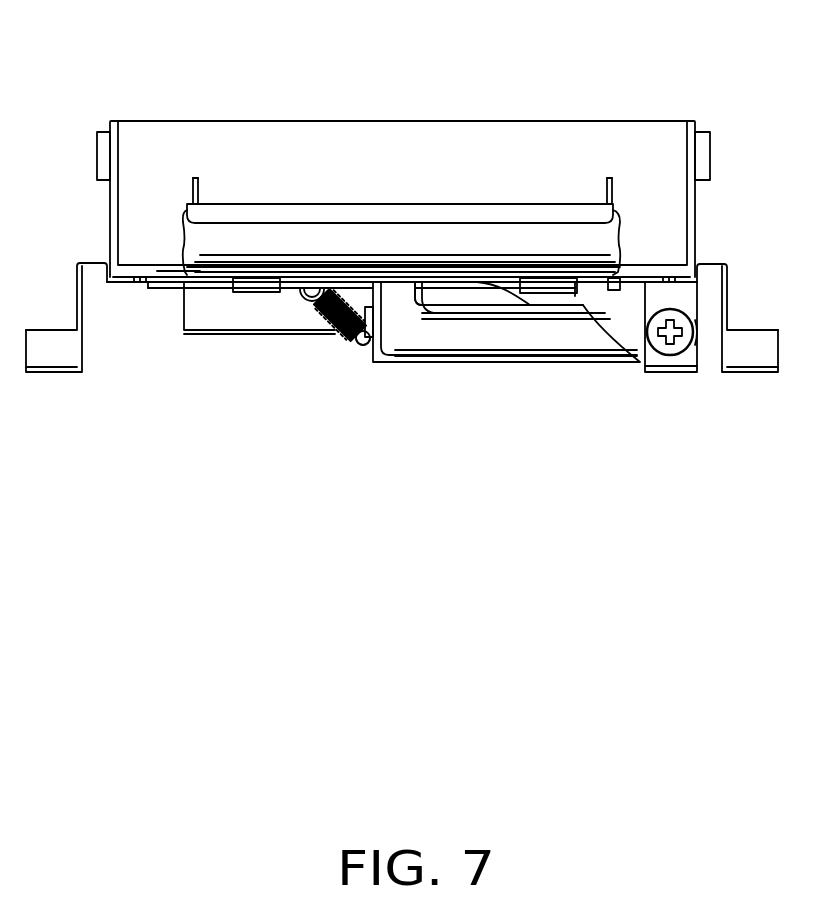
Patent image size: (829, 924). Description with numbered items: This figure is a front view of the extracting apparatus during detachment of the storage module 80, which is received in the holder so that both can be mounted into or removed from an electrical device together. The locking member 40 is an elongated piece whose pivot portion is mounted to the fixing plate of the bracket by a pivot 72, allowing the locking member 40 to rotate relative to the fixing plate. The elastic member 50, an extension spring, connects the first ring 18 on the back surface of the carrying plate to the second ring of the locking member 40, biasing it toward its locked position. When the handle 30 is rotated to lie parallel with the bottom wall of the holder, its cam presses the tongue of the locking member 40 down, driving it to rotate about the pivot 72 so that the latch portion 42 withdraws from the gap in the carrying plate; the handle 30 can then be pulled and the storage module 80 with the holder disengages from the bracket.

The first ring 18 is at (310, 290).
The handle 30 is at (446, 215).
The locking member 40 is at (513, 337).
The latch portion 42 is at (400, 298).
The elastic member 50 is at (333, 338).
The pivot 72 is at (677, 317).
The storage module 80 is at (613, 138).